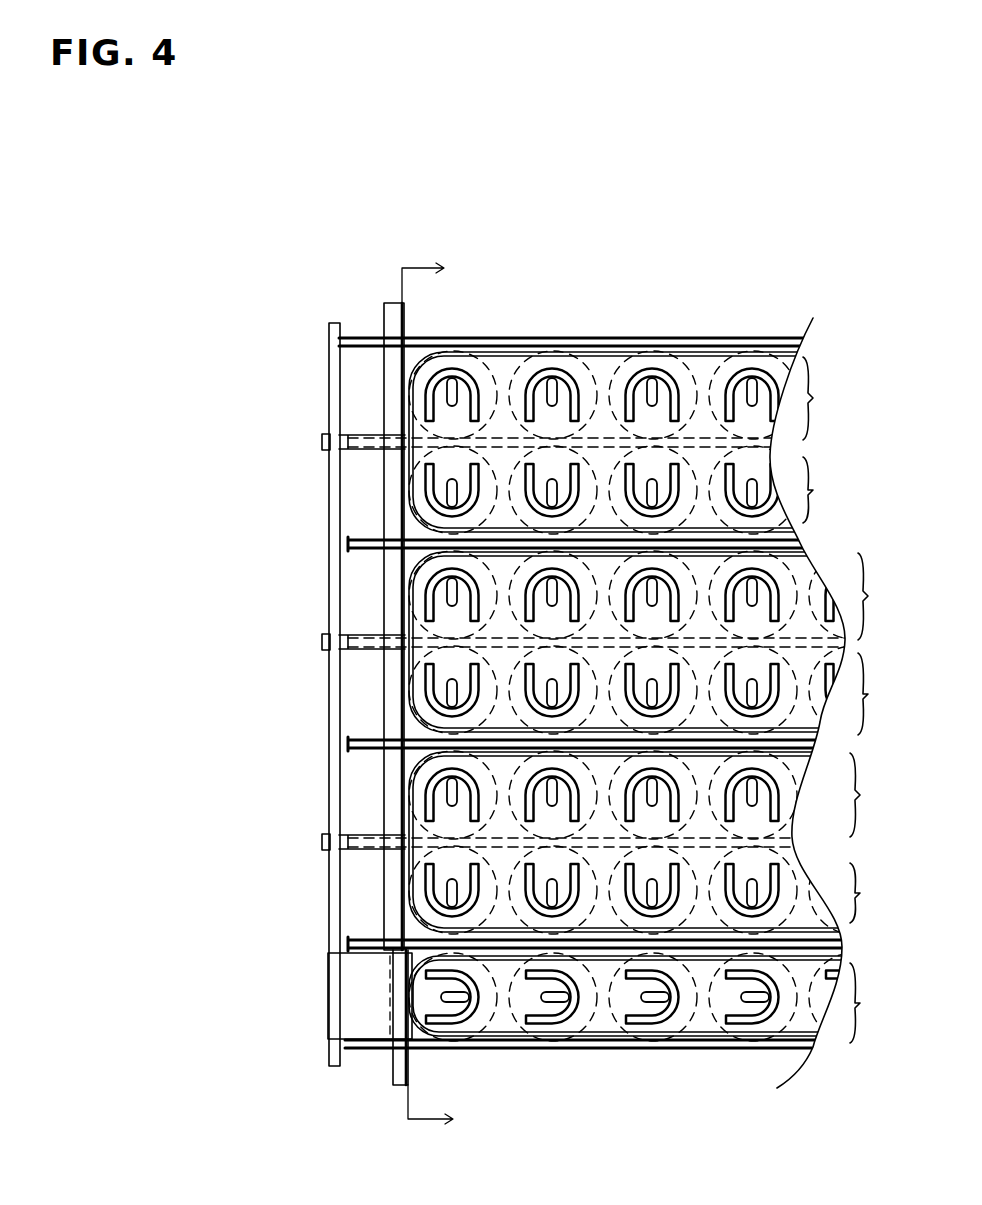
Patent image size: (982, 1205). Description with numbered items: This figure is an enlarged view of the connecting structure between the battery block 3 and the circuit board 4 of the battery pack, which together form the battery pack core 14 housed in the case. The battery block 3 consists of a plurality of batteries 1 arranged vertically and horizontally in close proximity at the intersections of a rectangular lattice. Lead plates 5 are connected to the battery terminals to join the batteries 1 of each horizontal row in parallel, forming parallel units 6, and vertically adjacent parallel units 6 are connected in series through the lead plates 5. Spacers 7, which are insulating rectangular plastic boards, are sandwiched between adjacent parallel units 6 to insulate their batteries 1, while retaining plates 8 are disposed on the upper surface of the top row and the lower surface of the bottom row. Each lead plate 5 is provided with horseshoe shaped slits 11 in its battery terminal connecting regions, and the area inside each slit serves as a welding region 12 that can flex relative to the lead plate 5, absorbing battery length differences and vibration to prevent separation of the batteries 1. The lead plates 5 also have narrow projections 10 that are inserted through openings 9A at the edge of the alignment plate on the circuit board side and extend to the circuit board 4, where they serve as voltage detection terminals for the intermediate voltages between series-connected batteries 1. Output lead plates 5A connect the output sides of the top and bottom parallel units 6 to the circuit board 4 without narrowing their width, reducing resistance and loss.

The battery 1 is at (590, 345).
The battery block 3 is at (773, 315).
The circuit board 4 is at (326, 592).
The lead plate 5 is at (702, 350).
The output lead plate 5A is at (365, 1027).
The parallel unit 6 is at (653, 697).
The spacer 7 is at (348, 538).
The retaining plate 8 is at (613, 345).
The opening 9A is at (398, 430).
The projection 10 is at (358, 430).
The horseshoe shaped slit 11 is at (421, 495).
The welding region 12 is at (443, 477).
The battery pack core 14 is at (336, 272).